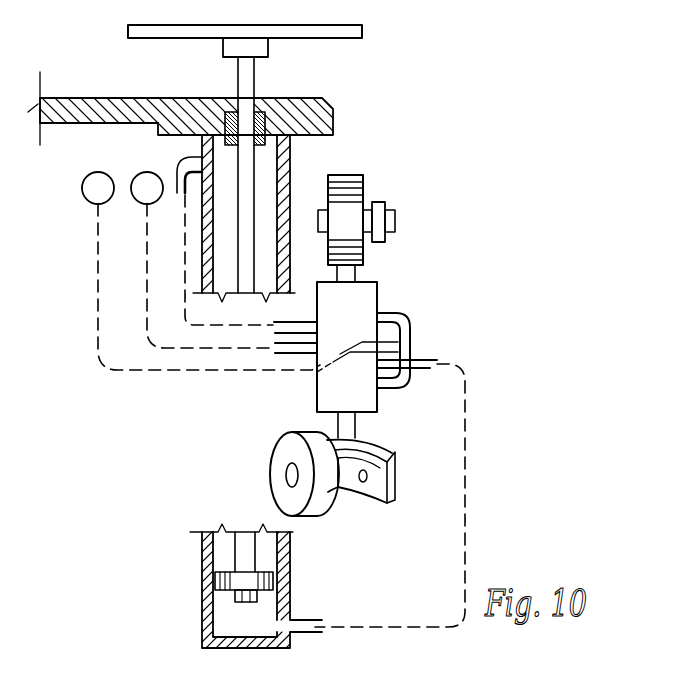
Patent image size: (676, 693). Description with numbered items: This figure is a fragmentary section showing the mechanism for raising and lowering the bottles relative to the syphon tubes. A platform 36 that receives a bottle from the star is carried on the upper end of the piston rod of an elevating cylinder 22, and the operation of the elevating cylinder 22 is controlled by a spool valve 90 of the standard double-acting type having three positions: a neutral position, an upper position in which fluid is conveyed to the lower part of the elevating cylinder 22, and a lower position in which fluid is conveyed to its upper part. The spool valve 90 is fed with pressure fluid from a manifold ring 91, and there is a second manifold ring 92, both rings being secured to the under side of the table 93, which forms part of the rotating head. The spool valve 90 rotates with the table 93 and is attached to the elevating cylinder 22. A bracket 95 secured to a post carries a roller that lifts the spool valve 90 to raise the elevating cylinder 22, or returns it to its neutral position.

The platform 36 is at (340, 33).
The table 93 is at (102, 108).
The second manifold ring 92 is at (88, 198).
The manifold ring 91 is at (143, 196).
The spool valve 90 is at (366, 300).
The bracket 95 is at (385, 240).
The elevating cylinder 22 is at (202, 599).